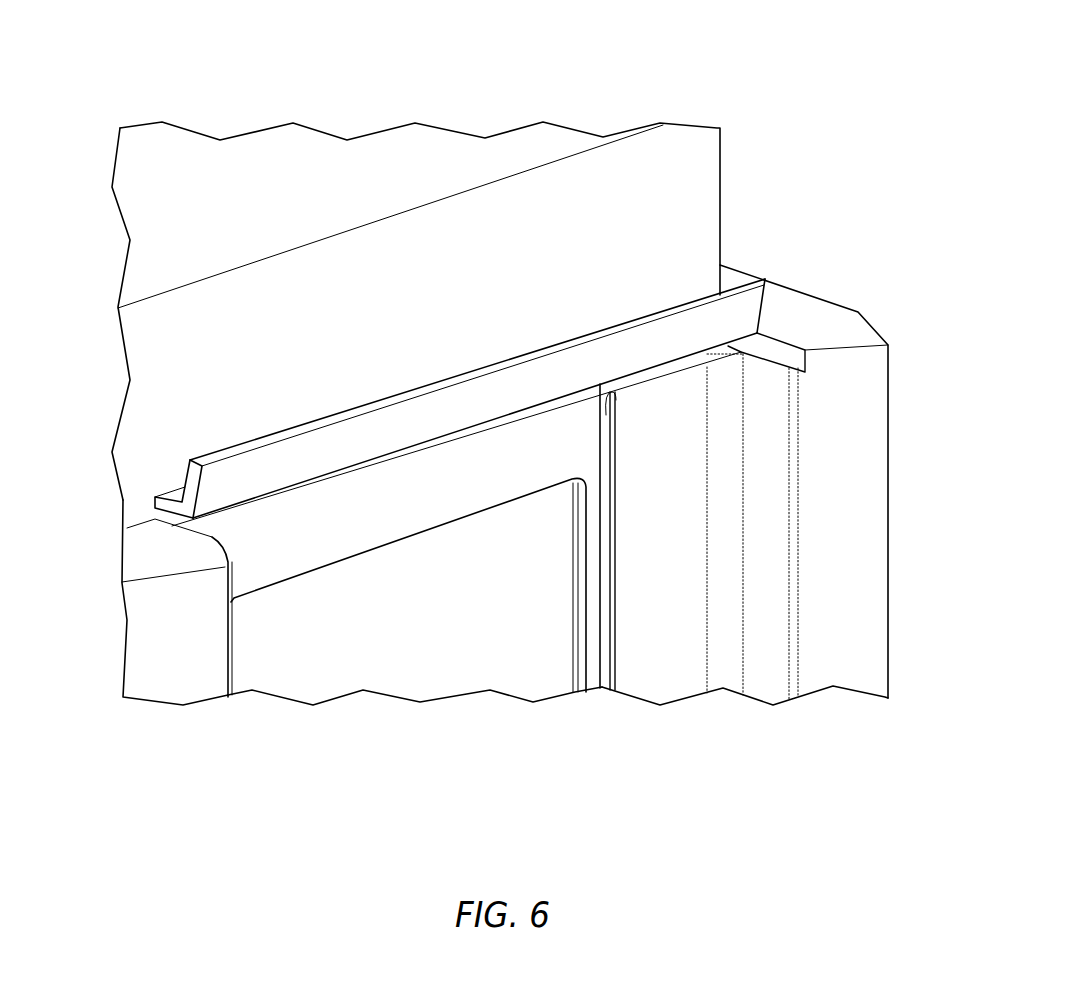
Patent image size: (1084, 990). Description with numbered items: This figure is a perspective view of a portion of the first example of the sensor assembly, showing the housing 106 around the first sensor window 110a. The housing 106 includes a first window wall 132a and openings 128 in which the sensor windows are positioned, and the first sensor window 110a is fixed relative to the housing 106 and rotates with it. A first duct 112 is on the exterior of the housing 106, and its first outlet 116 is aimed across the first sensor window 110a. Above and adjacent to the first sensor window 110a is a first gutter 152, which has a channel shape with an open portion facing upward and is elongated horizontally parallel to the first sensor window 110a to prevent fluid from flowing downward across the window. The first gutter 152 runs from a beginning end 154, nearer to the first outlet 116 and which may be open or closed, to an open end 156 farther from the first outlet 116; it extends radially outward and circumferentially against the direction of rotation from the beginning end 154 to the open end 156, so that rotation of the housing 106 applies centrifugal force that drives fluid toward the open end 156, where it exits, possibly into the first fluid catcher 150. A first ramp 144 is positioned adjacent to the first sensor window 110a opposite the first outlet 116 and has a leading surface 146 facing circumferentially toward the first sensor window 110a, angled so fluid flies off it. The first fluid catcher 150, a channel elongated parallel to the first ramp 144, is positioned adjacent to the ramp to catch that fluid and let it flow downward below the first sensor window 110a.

The housing 106 is at (270, 162).
The first window wall 132a is at (670, 176).
The first gutter 152 is at (448, 415).
The beginning end 154 is at (176, 477).
The open end 156 is at (765, 307).
The first fluid catcher 150 is at (860, 467).
The leading surface 146 is at (682, 587).
The first ramp 144 is at (728, 625).
The openings 128 is at (613, 638).
The first sensor window 110a is at (407, 650).
The first duct 112 is at (175, 628).
The first outlet 116 is at (220, 546).